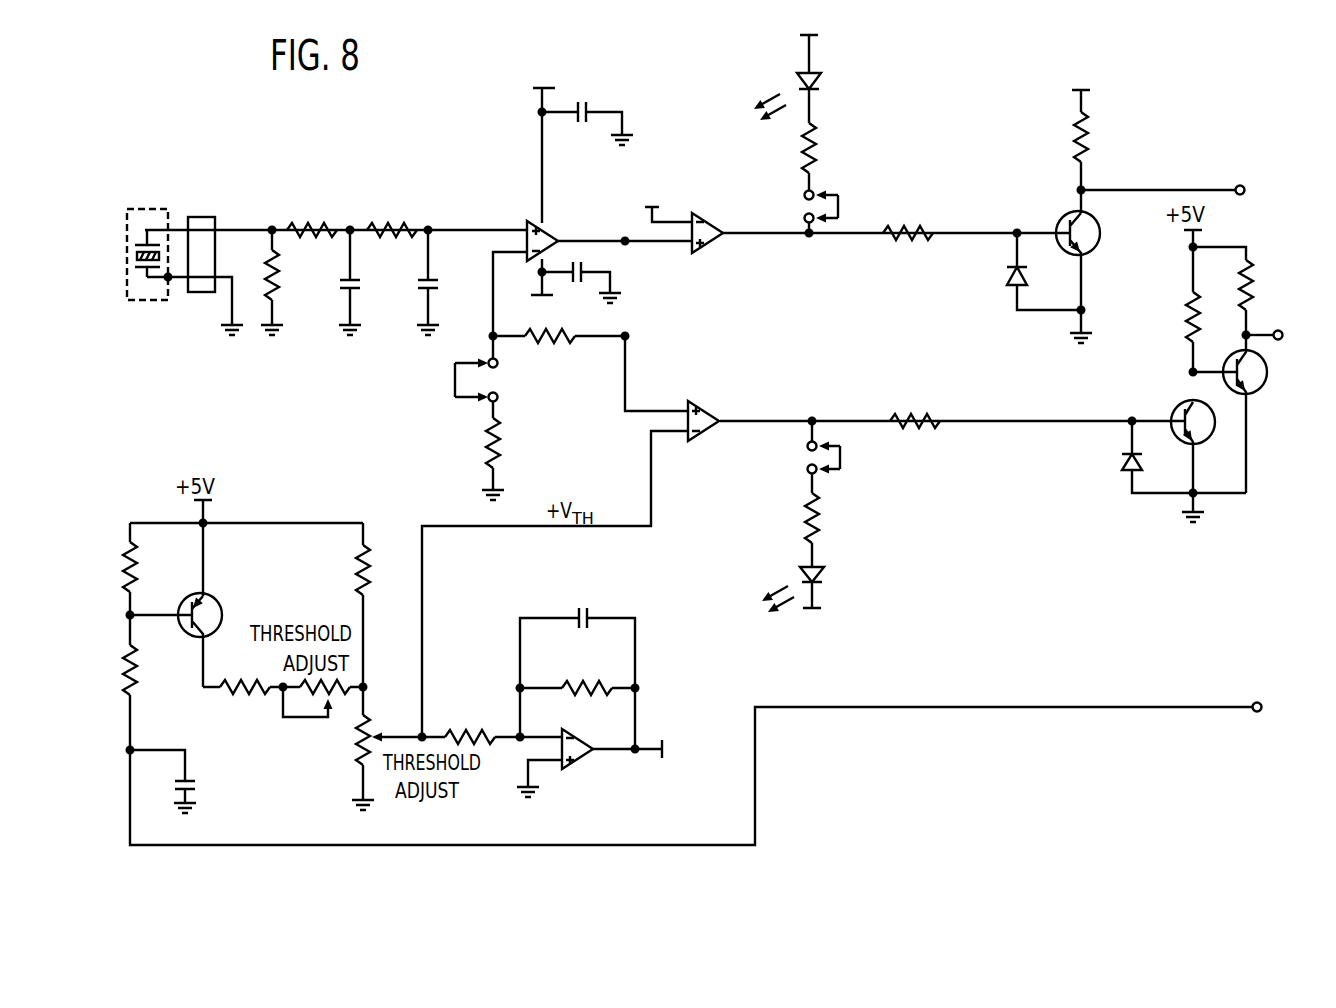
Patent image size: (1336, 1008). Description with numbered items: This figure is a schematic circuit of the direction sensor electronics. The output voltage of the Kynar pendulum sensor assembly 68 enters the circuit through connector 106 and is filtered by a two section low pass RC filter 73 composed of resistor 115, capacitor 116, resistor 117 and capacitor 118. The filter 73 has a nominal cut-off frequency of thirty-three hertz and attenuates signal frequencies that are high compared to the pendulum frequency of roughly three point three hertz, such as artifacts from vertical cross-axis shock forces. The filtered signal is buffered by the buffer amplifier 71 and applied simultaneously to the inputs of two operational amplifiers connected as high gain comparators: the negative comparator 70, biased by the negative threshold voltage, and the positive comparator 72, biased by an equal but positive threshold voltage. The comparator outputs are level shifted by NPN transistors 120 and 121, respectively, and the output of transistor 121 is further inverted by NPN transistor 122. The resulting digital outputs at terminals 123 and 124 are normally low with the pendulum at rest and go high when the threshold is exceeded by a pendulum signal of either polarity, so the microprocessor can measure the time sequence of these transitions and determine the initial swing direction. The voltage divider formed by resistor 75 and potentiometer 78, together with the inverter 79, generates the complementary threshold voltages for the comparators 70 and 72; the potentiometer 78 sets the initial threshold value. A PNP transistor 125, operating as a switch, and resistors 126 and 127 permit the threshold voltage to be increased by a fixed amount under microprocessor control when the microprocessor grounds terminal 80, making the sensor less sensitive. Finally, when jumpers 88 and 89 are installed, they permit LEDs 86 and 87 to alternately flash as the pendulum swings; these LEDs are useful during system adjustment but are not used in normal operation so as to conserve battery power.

The pendulum sensor assembly 68 is at (133, 302).
The connector 106 is at (200, 215).
The low pass filter 73 is at (381, 187).
The resistor 115 is at (314, 222).
The capacitor 116 is at (345, 283).
The resistor 117 is at (396, 222).
The capacitor 118 is at (424, 284).
The buffer amplifier 71 is at (552, 236).
The negative comparator 70 is at (702, 216).
The positive comparator 72 is at (704, 410).
The LED 86 is at (821, 83).
The LED 87 is at (826, 572).
The jumper 88 is at (841, 205).
The jumper 89 is at (843, 458).
The NPN transistor 120 is at (1063, 218).
The NPN transistor 121 is at (1175, 405).
The NPN transistor 122 is at (1259, 391).
The terminal 123 is at (1239, 185).
The terminal 124 is at (1279, 330).
The PNP transistor 125 is at (216, 598).
The resistor 75 is at (358, 569).
The resistor 126 is at (262, 681).
The resistor 127 is at (342, 697).
The potentiometer 78 is at (360, 746).
The inverting amplifier 79 is at (581, 758).
The terminal 80 is at (1257, 702).